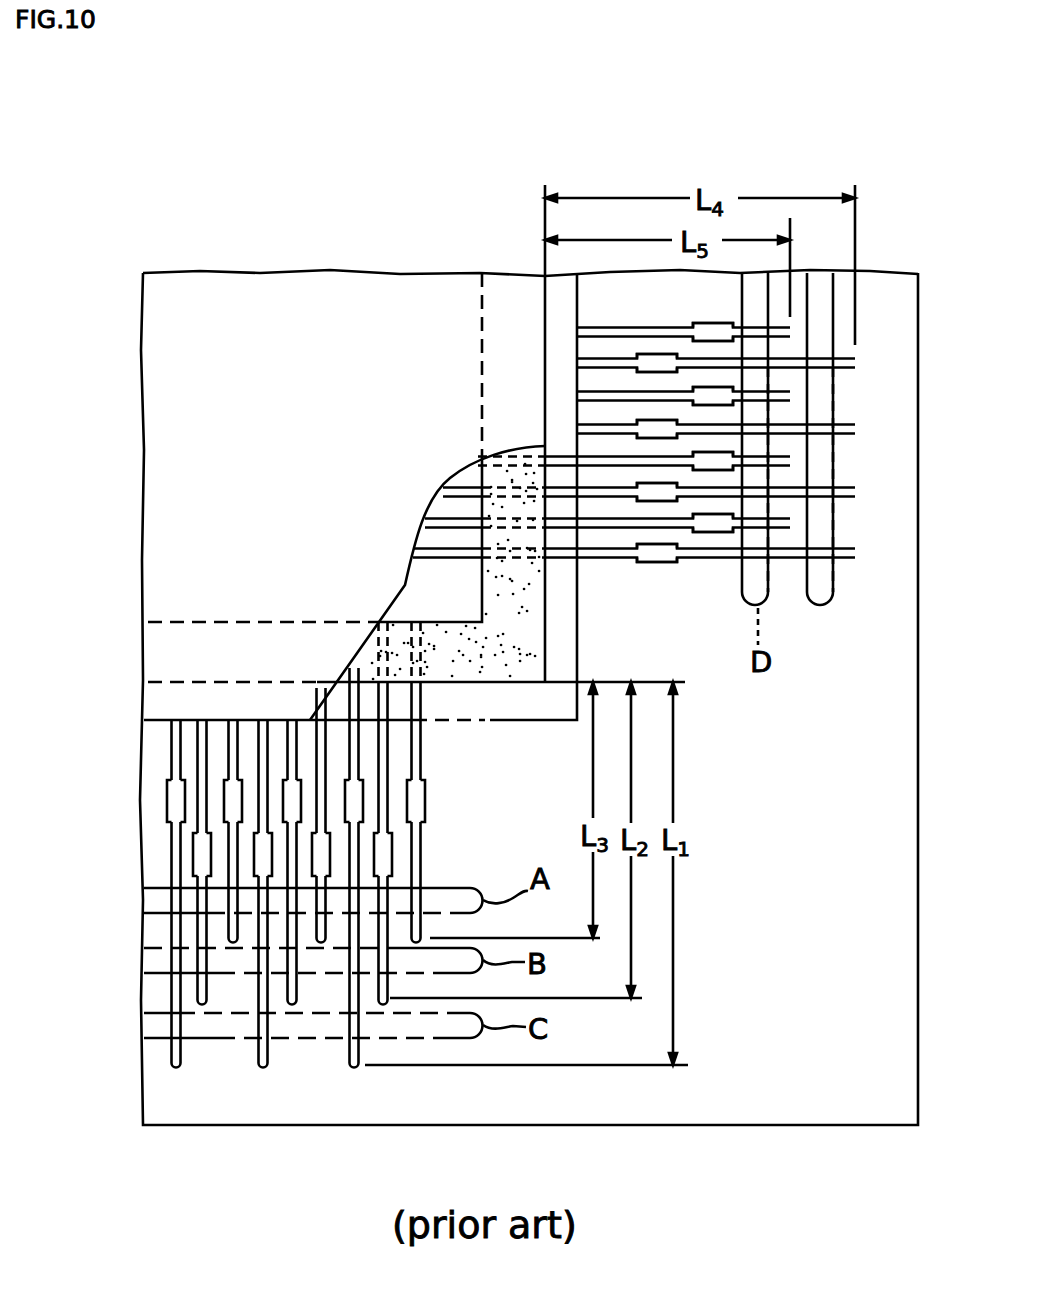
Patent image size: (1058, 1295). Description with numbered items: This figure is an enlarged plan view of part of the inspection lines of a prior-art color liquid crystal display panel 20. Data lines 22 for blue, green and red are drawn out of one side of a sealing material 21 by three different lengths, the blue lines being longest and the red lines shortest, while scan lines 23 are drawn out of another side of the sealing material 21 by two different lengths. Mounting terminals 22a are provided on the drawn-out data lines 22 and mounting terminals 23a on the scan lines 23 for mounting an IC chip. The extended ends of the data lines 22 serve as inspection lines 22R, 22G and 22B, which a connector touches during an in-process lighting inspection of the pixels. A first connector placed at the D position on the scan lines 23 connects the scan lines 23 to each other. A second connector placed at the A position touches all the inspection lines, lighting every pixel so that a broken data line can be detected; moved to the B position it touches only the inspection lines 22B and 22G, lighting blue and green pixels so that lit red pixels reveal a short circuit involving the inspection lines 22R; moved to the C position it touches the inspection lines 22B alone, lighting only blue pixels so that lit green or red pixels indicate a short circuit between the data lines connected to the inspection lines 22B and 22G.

The color liquid crystal display panel 20 is at (320, 335).
The sealing material 21 is at (490, 583).
The data lines 22 is at (312, 873).
The mounting terminals 22a is at (225, 780).
The inspection data lines for blue 22B is at (265, 718).
The inspection data lines for green 22G is at (288, 718).
The inspection data lines for red 22R is at (316, 712).
The scan lines 23 is at (630, 328).
The mounting terminals 23a is at (657, 360).